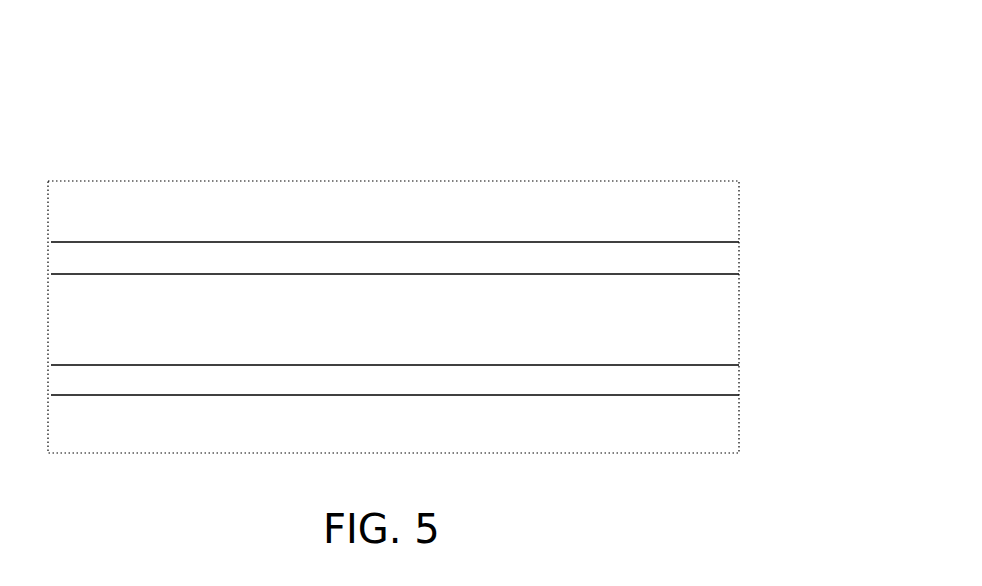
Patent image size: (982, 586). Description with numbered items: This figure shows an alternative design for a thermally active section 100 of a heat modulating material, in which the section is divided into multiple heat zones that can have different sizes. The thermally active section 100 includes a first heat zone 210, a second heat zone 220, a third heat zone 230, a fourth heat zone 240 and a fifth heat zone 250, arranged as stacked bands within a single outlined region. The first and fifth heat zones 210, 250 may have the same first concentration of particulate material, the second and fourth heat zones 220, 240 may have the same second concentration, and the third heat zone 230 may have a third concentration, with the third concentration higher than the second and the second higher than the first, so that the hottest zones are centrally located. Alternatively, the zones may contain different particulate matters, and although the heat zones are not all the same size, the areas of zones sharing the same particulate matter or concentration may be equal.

The thermally active section 100 is at (393, 239).
The first heat zone 210 is at (445, 192).
The second heat zone 220 is at (445, 232).
The third heat zone 230 is at (445, 311).
The fourth heat zone 240 is at (446, 351).
The fifth heat zone 250 is at (444, 411).